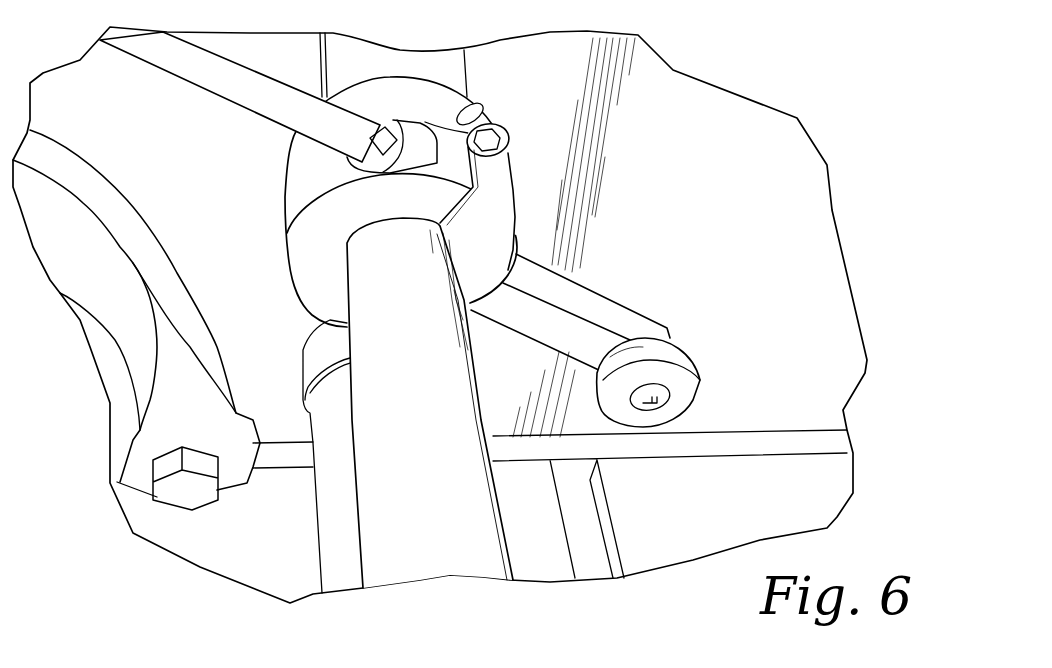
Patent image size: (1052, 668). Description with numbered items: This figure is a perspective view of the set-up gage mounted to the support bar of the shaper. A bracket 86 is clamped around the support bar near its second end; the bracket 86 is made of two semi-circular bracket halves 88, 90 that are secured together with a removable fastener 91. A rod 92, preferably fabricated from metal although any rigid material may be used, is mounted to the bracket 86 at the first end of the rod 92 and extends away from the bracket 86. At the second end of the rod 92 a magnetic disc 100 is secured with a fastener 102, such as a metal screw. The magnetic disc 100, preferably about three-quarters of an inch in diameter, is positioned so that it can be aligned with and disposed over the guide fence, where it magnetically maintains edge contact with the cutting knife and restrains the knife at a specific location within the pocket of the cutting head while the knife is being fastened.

The bracket 86 is at (483, 213).
The semi-circular bracket half 88 is at (313, 232).
The semi-circular bracket half 90 is at (497, 247).
The removable fastener 91 is at (417, 140).
The rod 92 is at (583, 313).
The magnetic disc 100 is at (693, 382).
The fastener 102 is at (663, 400).